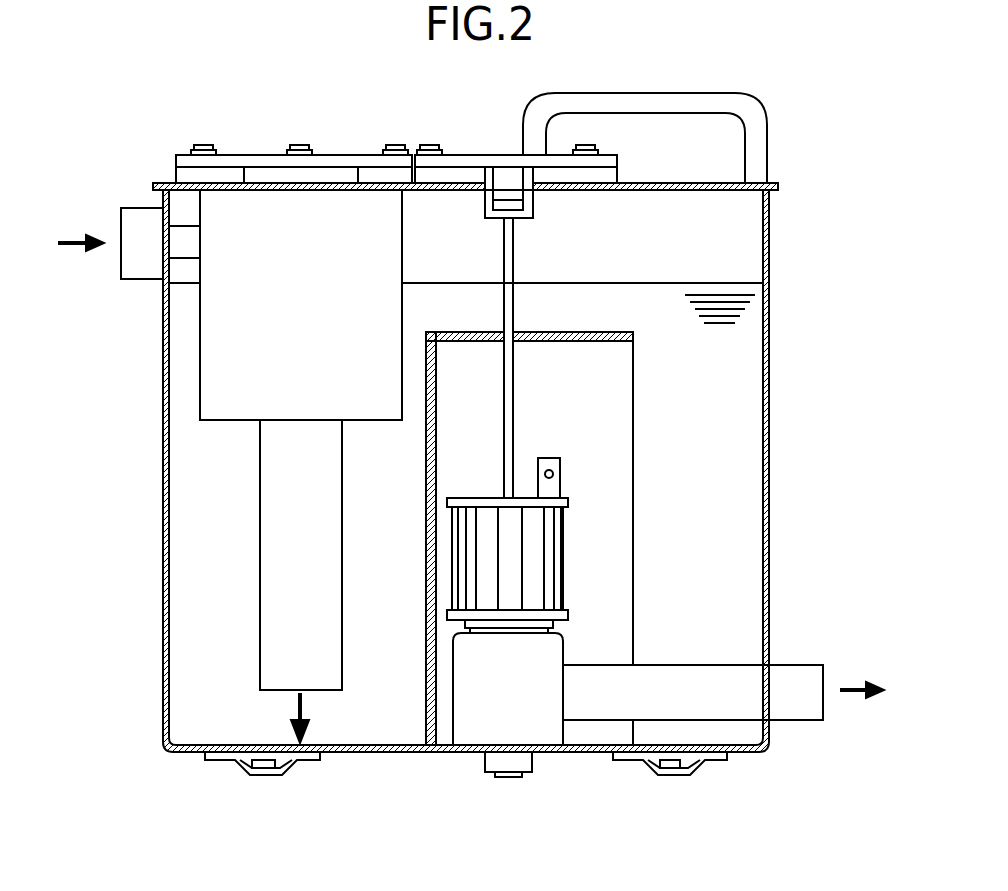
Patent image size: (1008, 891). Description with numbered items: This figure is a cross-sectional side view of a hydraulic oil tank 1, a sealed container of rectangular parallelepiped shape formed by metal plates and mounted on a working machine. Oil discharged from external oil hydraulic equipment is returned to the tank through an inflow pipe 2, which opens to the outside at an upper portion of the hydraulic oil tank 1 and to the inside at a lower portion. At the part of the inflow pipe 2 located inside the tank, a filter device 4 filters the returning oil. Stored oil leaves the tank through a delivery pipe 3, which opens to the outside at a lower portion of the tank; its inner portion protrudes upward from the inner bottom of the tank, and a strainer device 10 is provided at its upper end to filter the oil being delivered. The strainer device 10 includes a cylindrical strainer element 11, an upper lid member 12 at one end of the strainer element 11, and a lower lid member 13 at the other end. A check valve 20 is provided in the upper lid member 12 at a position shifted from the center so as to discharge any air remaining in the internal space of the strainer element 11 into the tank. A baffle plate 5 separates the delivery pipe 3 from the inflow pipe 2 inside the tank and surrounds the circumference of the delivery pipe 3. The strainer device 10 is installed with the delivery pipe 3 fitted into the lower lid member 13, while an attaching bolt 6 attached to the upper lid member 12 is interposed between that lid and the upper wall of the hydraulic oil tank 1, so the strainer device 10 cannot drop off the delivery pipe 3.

The hydraulic oil tank 1 is at (788, 268).
The inflow pipe 2 is at (132, 225).
The delivery pipe 3 is at (806, 722).
The filter device 4 is at (210, 367).
The baffle plate 5 is at (600, 332).
The attaching bolt 6 is at (503, 262).
The strainer device 10 is at (658, 565).
The strainer element 11 is at (547, 548).
The upper lid member 12 is at (568, 500).
The lower lid member 13 is at (568, 614).
The check valve 20 is at (556, 444).